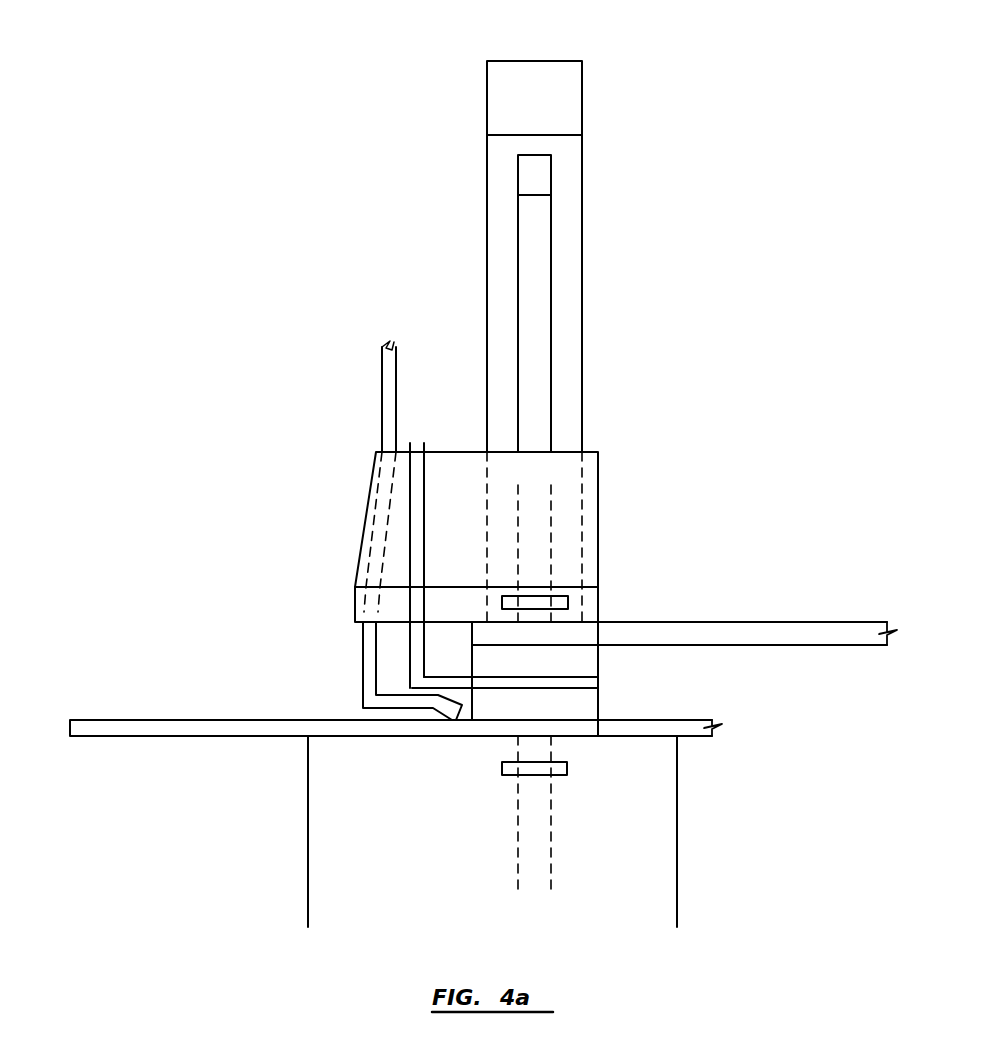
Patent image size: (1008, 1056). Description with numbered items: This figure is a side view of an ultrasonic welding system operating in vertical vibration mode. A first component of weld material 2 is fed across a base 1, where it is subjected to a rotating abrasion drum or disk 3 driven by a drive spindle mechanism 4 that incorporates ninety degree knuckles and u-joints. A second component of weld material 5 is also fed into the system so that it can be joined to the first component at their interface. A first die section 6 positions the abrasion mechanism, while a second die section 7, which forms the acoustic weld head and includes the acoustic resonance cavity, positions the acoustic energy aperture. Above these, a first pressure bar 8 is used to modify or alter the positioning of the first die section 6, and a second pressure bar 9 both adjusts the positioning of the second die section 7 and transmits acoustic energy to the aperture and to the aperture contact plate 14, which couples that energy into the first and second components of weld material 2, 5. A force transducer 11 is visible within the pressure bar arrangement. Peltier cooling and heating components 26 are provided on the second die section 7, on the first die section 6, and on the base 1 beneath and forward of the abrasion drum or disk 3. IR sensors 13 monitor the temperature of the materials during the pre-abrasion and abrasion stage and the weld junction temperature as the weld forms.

The base 1 is at (468, 845).
The first component of weld material 2 is at (247, 718).
The rotating abrasion drum or disk 3 is at (600, 712).
The drive spindle mechanism 4 is at (398, 657).
The second component of weld material 5 is at (838, 632).
The first die section 6 is at (600, 556).
The second die section 7 is at (600, 455).
The first pressure bar 8 is at (553, 320).
The second pressure bar 9 is at (583, 138).
The force transducer 11 is at (560, 88).
The IR sensors 13 is at (537, 522).
The aperture contact plate 14 is at (385, 614).
The Peltier cooling and heating components 26 is at (568, 602).